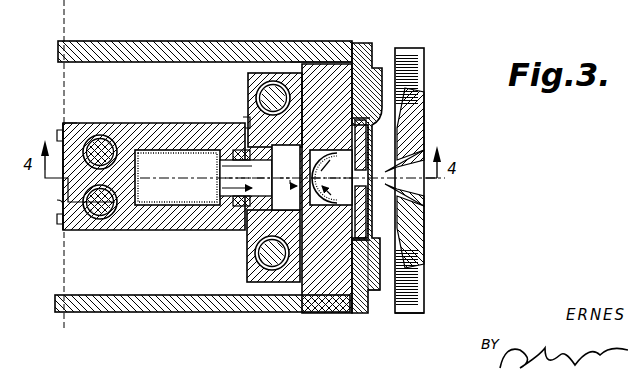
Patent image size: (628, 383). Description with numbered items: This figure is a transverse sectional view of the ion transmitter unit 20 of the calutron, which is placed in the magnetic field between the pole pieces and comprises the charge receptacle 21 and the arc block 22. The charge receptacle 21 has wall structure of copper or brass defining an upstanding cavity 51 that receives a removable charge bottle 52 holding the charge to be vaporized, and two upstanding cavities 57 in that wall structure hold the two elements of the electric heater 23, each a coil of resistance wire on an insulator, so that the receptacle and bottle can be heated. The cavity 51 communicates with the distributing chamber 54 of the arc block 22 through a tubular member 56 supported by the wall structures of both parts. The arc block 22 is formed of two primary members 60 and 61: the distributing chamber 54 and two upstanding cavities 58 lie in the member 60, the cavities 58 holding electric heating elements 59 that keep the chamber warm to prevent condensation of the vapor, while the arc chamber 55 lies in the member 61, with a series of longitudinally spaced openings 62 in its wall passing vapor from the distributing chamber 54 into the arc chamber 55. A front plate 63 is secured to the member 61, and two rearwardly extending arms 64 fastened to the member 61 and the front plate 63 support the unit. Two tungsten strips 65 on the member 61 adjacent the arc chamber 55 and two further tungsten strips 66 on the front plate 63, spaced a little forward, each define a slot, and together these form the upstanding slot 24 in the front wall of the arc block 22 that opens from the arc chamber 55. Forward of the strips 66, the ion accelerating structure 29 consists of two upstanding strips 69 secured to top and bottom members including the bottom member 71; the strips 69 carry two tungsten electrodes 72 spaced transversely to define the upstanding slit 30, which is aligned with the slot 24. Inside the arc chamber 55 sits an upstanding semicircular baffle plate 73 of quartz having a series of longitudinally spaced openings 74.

The ion transmitter unit 20 is at (131, 24).
The charge receptacle 21 is at (163, 118).
The arc block 22 is at (354, 40).
The electric heater 23 is at (70, 125).
The upstanding slot 24 is at (373, 230).
The ion accelerating structure 29 is at (414, 46).
The upstanding slit 30 is at (393, 180).
The upstanding cavity 51 is at (135, 125).
The charge bottle 52 is at (155, 210).
The distributing chamber 54 is at (235, 205).
The arc chamber 55 is at (346, 128).
The tubular member 56 is at (195, 195).
The upstanding cavities 57 is at (97, 125).
The upstanding cavities 58 is at (255, 100).
The electric heating elements 59 is at (270, 84).
The primary member 60 is at (248, 82).
The primary member 61 is at (279, 62).
The openings 62 is at (310, 210).
The front plate 63 is at (372, 293).
The rearwardly extending arms 64 is at (82, 50).
The upstanding strips 65 is at (366, 133).
The upstanding strips 66 is at (404, 114).
The upstanding strips 69 is at (394, 126).
The bottom member 71 is at (406, 300).
The electrodes 72 is at (392, 168).
The semicircular baffle plate 73 is at (250, 118).
The openings 74 is at (320, 210).